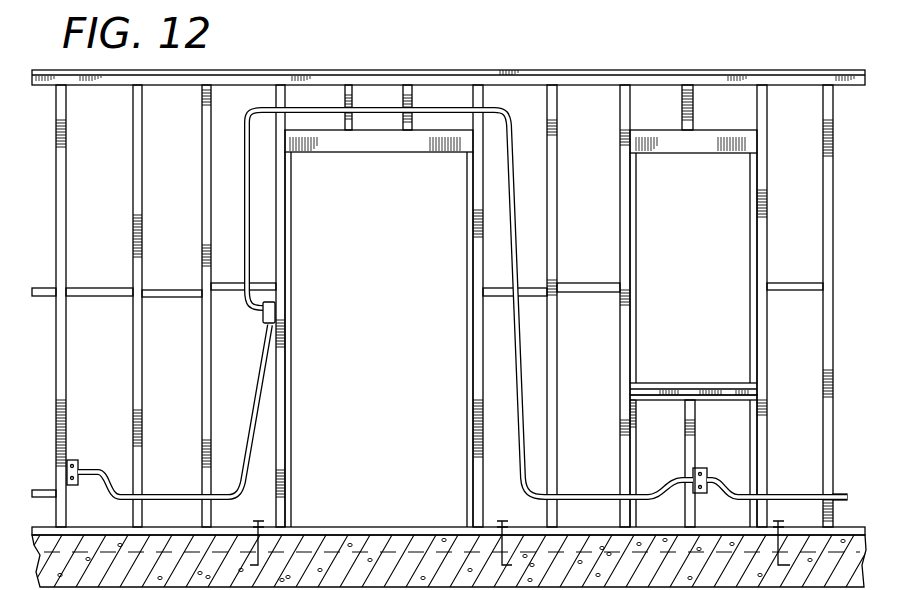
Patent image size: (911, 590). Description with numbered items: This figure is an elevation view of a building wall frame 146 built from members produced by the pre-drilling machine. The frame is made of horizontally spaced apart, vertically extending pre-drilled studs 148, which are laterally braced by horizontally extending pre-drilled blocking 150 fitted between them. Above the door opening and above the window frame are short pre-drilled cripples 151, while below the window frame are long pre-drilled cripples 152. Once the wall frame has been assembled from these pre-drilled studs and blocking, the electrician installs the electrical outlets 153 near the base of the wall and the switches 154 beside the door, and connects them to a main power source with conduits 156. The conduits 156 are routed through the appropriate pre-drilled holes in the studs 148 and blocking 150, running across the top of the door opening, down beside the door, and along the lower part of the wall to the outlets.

The building wall frame 146 is at (296, 70).
The pre-drilled studs 148 is at (133, 173).
The pre-drilled blocking 150 is at (155, 288).
The pre-drilled cripples 151 is at (354, 120).
The long pre-drilled cripples 152 is at (633, 442).
The electrical outlets 153 is at (72, 460).
The switches 154 is at (276, 307).
The conduits 156 is at (247, 122).